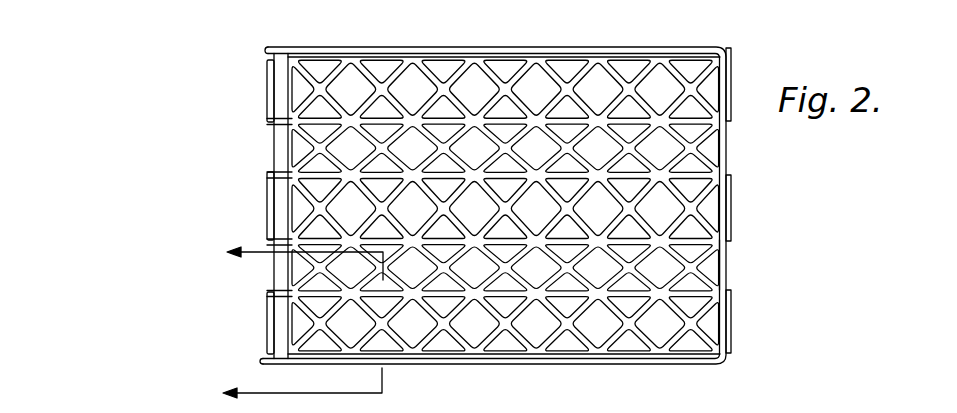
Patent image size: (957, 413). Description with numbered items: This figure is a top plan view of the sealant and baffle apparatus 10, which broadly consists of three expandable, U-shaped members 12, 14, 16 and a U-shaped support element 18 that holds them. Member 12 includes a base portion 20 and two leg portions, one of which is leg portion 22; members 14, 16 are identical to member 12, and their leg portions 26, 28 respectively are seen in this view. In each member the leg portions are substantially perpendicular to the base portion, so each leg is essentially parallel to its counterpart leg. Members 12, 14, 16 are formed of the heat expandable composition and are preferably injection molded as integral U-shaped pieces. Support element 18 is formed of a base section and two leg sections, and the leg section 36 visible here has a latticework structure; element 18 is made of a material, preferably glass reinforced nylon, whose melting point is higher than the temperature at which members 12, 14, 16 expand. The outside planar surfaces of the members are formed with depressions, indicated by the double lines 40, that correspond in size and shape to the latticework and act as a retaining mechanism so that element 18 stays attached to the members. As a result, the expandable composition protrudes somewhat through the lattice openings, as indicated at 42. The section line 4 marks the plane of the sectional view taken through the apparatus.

The section line 4- 4 is at (287, 325).
The sealant and baffle apparatus 10 is at (63, 177).
The expandable U-shaped member 12 is at (216, 318).
The expandable U-shaped member 14 is at (198, 200).
The expandable U-shaped member 16 is at (208, 85).
The support element 18 is at (735, 128).
The base portion 20 is at (267, 294).
The leg portion 22 is at (683, 297).
The leg portion 26 is at (710, 202).
The leg portion 28 is at (713, 85).
The leg section 36 is at (723, 260).
The depressions 40 is at (370, 50).
The protruding expandable composition 42 is at (267, 78).